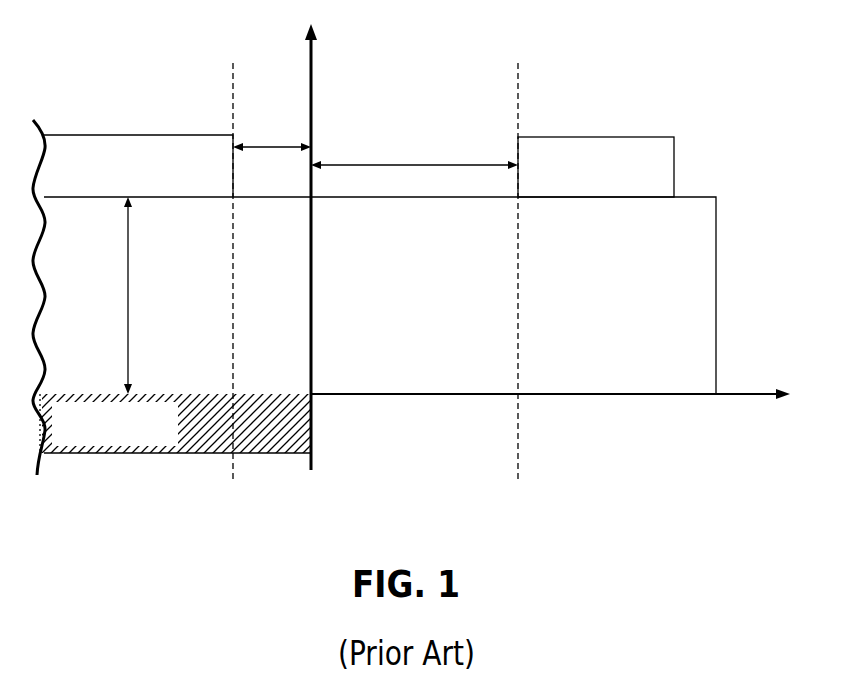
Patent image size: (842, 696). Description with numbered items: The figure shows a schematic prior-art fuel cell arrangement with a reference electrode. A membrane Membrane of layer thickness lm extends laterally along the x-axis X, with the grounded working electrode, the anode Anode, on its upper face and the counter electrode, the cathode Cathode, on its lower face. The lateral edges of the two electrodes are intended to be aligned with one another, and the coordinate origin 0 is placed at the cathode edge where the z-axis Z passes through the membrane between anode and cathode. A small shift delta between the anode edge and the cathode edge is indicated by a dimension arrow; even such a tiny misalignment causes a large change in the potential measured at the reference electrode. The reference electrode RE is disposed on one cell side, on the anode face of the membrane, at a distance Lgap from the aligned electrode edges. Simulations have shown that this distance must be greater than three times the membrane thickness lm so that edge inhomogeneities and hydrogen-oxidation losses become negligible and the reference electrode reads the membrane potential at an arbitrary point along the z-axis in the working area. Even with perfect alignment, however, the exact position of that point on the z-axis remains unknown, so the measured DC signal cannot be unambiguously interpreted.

The anode Anode is at (138, 166).
The cathode Cathode is at (175, 423).
The membrane Membrane is at (380, 295).
The reference electrode RE is at (596, 167).
The z-axis Z is at (298, 247).
The x-axis X is at (550, 380).
The origin 0 is at (290, 382).
The shift delta is at (272, 130).
The distance L_gap Lgap is at (414, 148).
The membrane layer thickness lm is at (109, 295).